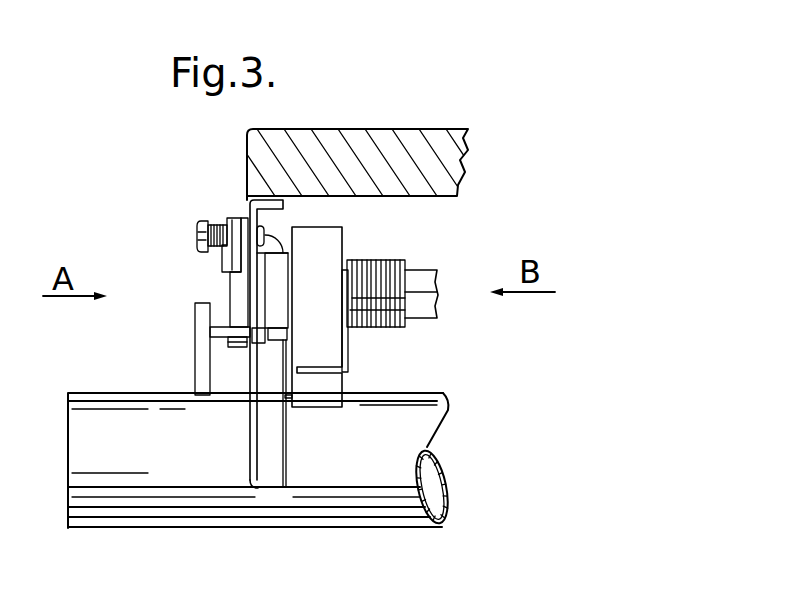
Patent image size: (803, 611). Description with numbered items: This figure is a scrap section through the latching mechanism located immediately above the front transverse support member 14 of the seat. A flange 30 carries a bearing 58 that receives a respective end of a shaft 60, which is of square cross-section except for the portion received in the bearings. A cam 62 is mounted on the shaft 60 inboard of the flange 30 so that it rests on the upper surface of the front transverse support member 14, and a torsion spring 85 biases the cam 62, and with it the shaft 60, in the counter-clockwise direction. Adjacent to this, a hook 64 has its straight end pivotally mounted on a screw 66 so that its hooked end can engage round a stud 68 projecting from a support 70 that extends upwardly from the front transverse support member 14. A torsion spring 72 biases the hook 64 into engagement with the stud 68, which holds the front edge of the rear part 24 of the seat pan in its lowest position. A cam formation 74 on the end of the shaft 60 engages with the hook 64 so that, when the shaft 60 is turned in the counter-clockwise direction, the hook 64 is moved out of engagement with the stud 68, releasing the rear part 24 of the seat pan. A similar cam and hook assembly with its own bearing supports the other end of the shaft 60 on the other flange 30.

The front transverse support member 14 is at (135, 493).
The rear part of the seat pan 24 is at (392, 140).
The flange 30 is at (252, 478).
The bearing 58 is at (262, 345).
The shaft 60 is at (423, 307).
The cam 62 is at (327, 395).
The hook 64 is at (240, 347).
The screw 66 is at (200, 221).
The stud 68 is at (215, 325).
The support 70 is at (197, 375).
The torsion spring 72 is at (210, 218).
The cam formation 74 is at (240, 292).
The torsion spring 85 is at (348, 345).